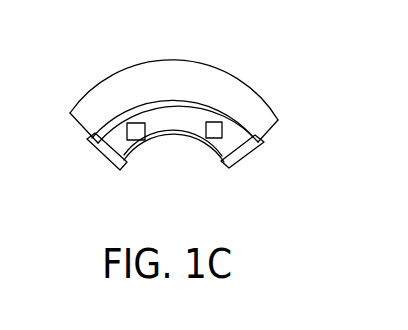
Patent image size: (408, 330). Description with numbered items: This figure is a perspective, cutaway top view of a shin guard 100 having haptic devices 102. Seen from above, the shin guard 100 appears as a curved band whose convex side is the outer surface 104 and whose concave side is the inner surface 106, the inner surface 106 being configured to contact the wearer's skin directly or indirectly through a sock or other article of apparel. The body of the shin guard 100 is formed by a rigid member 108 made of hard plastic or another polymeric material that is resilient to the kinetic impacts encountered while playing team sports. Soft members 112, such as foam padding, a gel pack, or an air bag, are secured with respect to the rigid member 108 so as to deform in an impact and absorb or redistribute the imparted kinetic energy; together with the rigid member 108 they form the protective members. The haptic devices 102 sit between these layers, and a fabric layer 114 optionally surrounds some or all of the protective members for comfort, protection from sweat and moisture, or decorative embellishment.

The shin guard 100 is at (249, 104).
The haptic devices 102 is at (197, 135).
The outer surface 104 is at (102, 82).
The inner surface 106 is at (219, 158).
The rigid member 108 is at (157, 63).
The soft members 112 is at (98, 145).
The fabric layer 114 is at (264, 143).